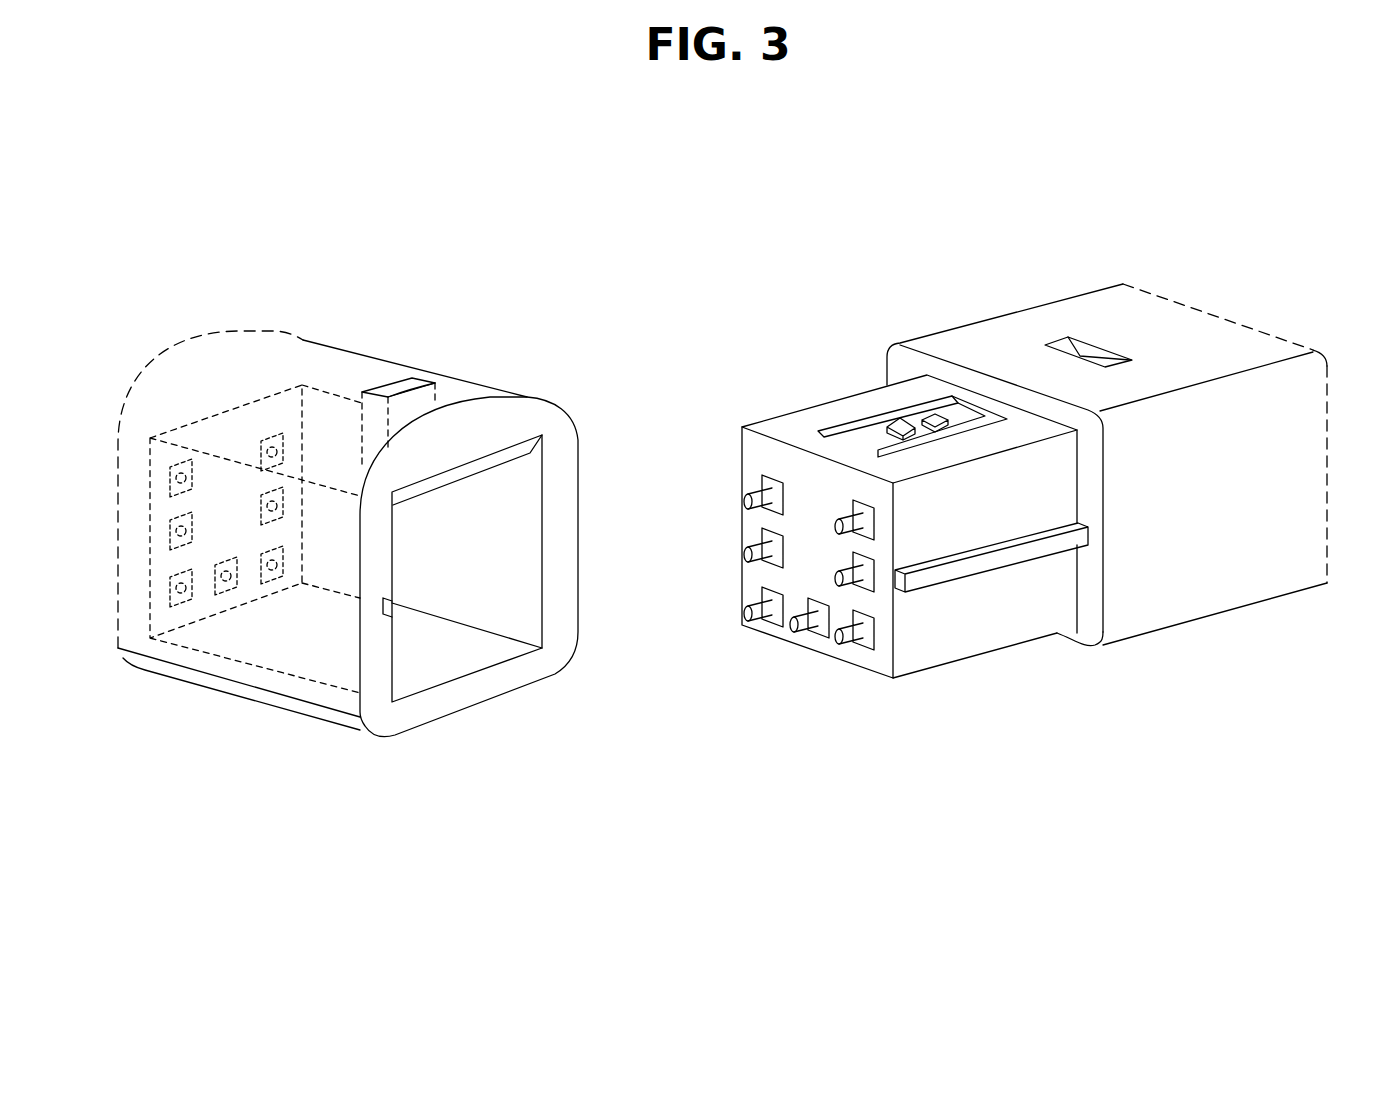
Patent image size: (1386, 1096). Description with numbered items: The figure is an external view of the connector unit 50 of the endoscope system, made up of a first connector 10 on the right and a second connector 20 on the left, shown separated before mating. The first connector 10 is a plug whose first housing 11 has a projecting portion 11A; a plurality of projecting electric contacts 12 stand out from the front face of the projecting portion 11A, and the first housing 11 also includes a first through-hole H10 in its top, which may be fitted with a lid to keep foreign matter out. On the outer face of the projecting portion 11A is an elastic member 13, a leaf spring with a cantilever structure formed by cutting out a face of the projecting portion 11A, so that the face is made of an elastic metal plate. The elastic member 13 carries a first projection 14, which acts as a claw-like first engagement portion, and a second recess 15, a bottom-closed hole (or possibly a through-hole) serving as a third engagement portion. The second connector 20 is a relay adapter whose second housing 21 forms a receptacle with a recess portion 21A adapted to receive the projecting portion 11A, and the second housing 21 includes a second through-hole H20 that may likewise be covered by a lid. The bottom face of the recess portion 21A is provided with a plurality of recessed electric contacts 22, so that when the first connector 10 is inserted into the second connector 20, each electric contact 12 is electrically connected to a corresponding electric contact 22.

The connector unit 50 is at (583, 203).
The second connector 20 is at (566, 274).
The first connector 10 is at (783, 275).
The second housing 21 is at (348, 519).
The recess portion 21A is at (489, 582).
The second through-hole H20 is at (395, 387).
The recessed electric contacts 22 is at (225, 590).
The first housing 11 is at (973, 321).
The projecting portion 11A is at (1000, 650).
The first through-hole H10 is at (1090, 347).
The projecting electric contacts 12 is at (848, 644).
The elastic member 13 is at (810, 407).
The first projection 14 is at (852, 421).
The second recess 15 is at (930, 417).